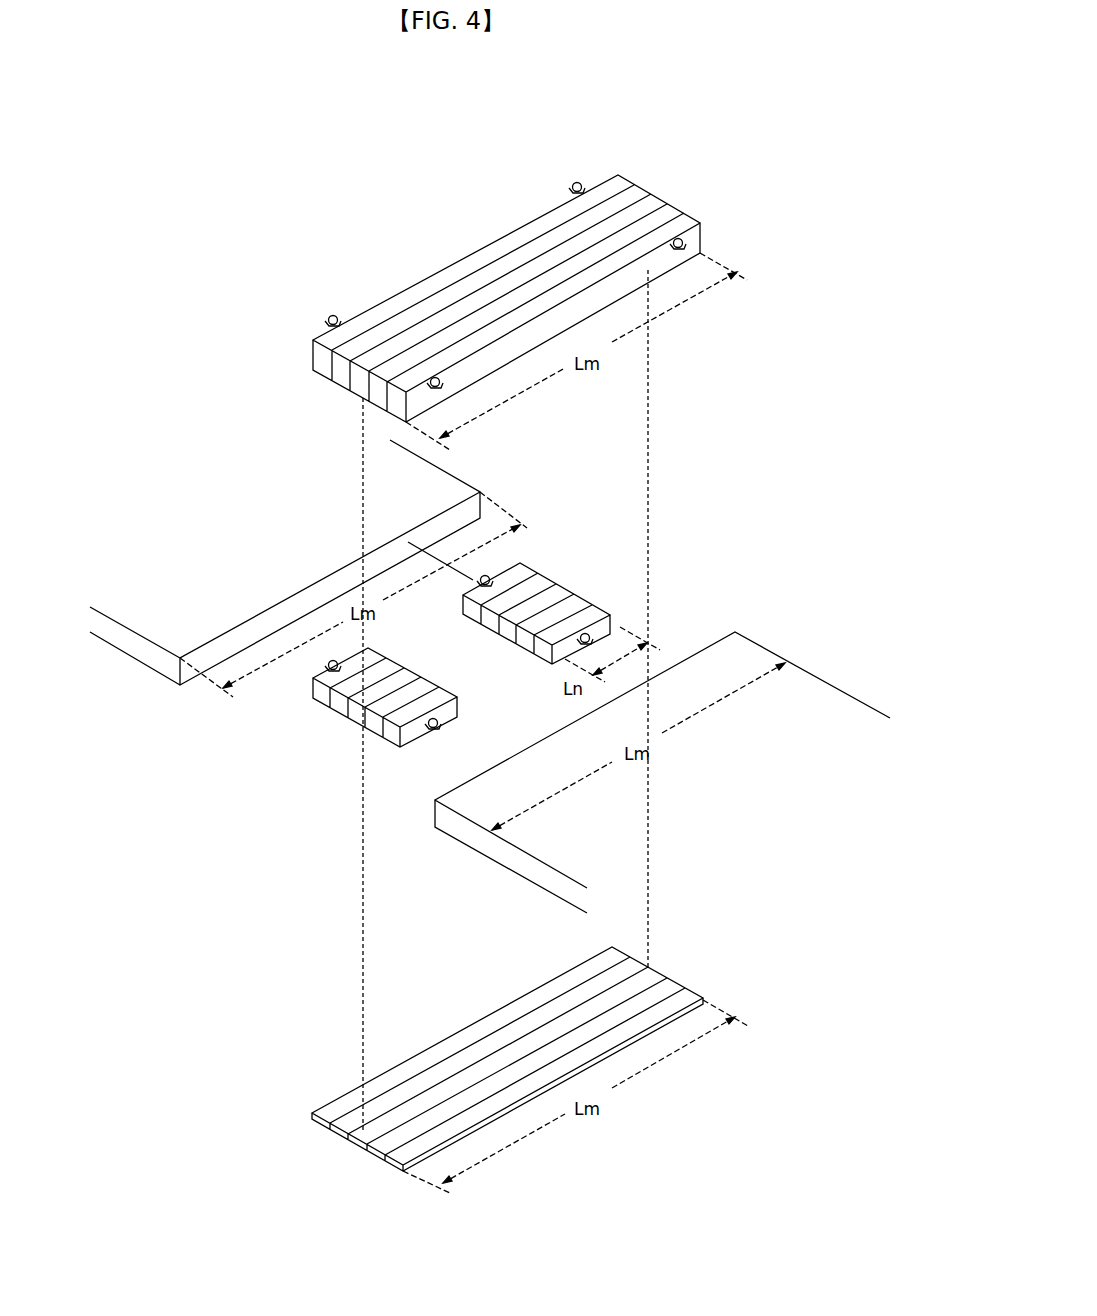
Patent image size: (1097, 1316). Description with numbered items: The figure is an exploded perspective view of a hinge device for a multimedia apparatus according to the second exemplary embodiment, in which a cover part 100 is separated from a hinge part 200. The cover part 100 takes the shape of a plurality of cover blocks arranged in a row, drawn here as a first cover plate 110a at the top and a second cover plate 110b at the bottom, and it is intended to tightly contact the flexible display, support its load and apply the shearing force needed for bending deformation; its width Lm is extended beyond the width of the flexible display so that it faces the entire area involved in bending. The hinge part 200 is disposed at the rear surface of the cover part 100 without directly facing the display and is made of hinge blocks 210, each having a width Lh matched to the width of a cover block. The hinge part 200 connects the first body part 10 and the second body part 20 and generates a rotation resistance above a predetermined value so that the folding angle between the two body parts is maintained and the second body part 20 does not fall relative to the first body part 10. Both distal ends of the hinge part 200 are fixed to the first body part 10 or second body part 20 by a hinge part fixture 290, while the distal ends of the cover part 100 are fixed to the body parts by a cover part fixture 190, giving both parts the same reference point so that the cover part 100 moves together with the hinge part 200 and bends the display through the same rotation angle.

The cover part 100 is at (561, 263).
The first cover plate 110a is at (612, 188).
The second cover plate 110b is at (547, 992).
The cover part fixture 190 is at (700, 236).
The hinge part 200 is at (517, 621).
The hinge block 210 is at (525, 568).
The hinge part fixture 290 is at (597, 642).
The first body part 10 is at (162, 663).
The second body part 20 is at (505, 860).